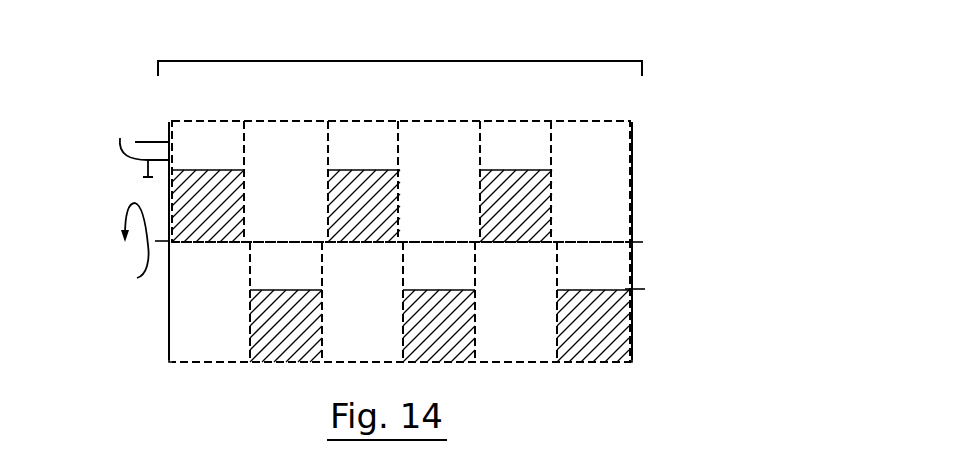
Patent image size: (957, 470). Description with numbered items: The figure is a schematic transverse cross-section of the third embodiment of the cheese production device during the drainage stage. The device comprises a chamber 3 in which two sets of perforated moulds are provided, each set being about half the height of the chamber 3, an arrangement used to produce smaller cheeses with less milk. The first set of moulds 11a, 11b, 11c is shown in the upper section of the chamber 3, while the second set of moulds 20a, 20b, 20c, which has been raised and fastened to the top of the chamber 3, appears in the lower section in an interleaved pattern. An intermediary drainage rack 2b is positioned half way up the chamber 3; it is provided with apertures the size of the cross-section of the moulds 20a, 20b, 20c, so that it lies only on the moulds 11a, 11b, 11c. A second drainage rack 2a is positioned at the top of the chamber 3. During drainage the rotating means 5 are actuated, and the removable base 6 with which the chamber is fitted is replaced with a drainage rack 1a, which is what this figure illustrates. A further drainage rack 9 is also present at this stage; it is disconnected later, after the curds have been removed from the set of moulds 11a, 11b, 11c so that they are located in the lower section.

The removable base 6 is at (503, 60).
The drainage rack 1a is at (560, 120).
The second drainage rack 2a is at (500, 363).
The intermediary drainage rack 2b is at (196, 243).
The chamber 3 is at (645, 289).
The rotating means 5 is at (643, 243).
The drainage rack 9 is at (188, 120).
The perforated mould 11a is at (208, 192).
The perforated mould 11b is at (364, 192).
The perforated mould 11c is at (516, 192).
The perforated mould 20a is at (286, 310).
The perforated mould 20b is at (439, 310).
The perforated mould 20c is at (593, 310).